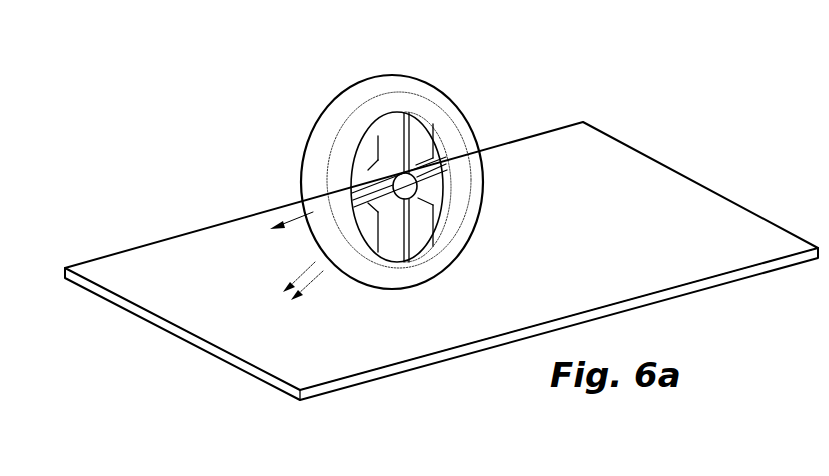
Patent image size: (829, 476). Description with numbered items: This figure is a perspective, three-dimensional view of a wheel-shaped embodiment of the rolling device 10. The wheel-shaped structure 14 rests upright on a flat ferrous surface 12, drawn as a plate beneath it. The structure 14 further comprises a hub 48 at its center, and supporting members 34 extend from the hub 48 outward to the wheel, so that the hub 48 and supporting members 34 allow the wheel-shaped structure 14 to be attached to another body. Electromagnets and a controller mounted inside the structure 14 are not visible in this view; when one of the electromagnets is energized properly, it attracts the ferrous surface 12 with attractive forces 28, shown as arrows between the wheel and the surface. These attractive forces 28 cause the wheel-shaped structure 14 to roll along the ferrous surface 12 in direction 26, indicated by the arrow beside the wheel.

The rolling device 10 is at (178, 52).
The ferrous surface 12 is at (165, 258).
The wheel-shaped structure 14 is at (325, 156).
The direction 26 is at (292, 210).
The attractive forces 28 is at (312, 285).
The supporting members 34 is at (447, 162).
The hub 48 is at (416, 191).